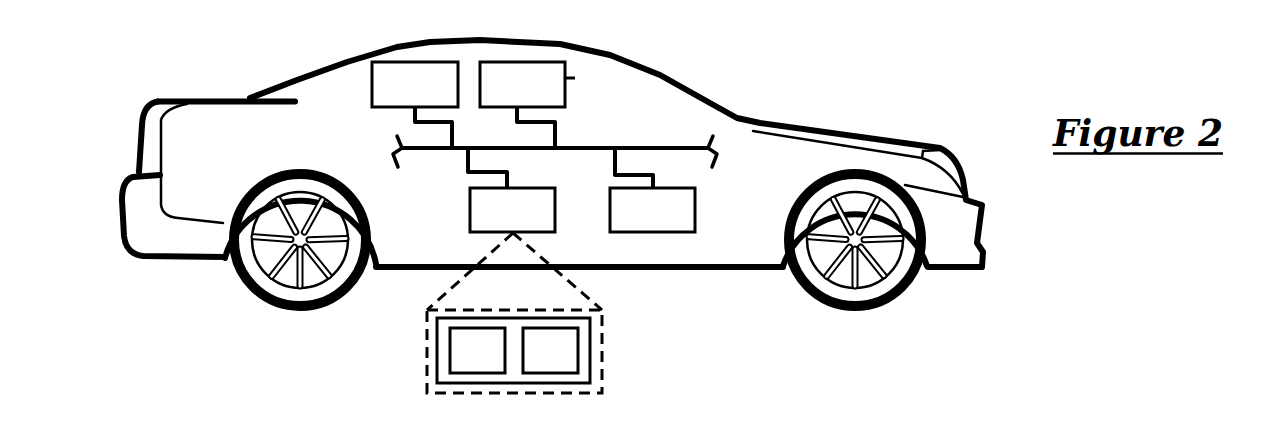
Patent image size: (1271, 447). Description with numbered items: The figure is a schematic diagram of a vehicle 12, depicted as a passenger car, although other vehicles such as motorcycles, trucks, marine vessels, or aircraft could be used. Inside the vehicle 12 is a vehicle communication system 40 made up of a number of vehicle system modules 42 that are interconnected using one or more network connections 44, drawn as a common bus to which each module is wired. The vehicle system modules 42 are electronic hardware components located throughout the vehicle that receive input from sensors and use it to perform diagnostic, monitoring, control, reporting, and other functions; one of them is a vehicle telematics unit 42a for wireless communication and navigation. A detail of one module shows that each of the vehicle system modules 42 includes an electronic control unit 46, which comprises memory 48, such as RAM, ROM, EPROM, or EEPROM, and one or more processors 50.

The vehicle 12 is at (748, 88).
The vehicle communication system 40 is at (346, 131).
The vehicle system module 42 is at (429, 94).
The vehicle telematics unit 42a is at (666, 220).
The network connection 44 is at (582, 146).
The electronic control unit 46 is at (533, 317).
The memory 48 is at (491, 362).
The processor 50 is at (564, 362).